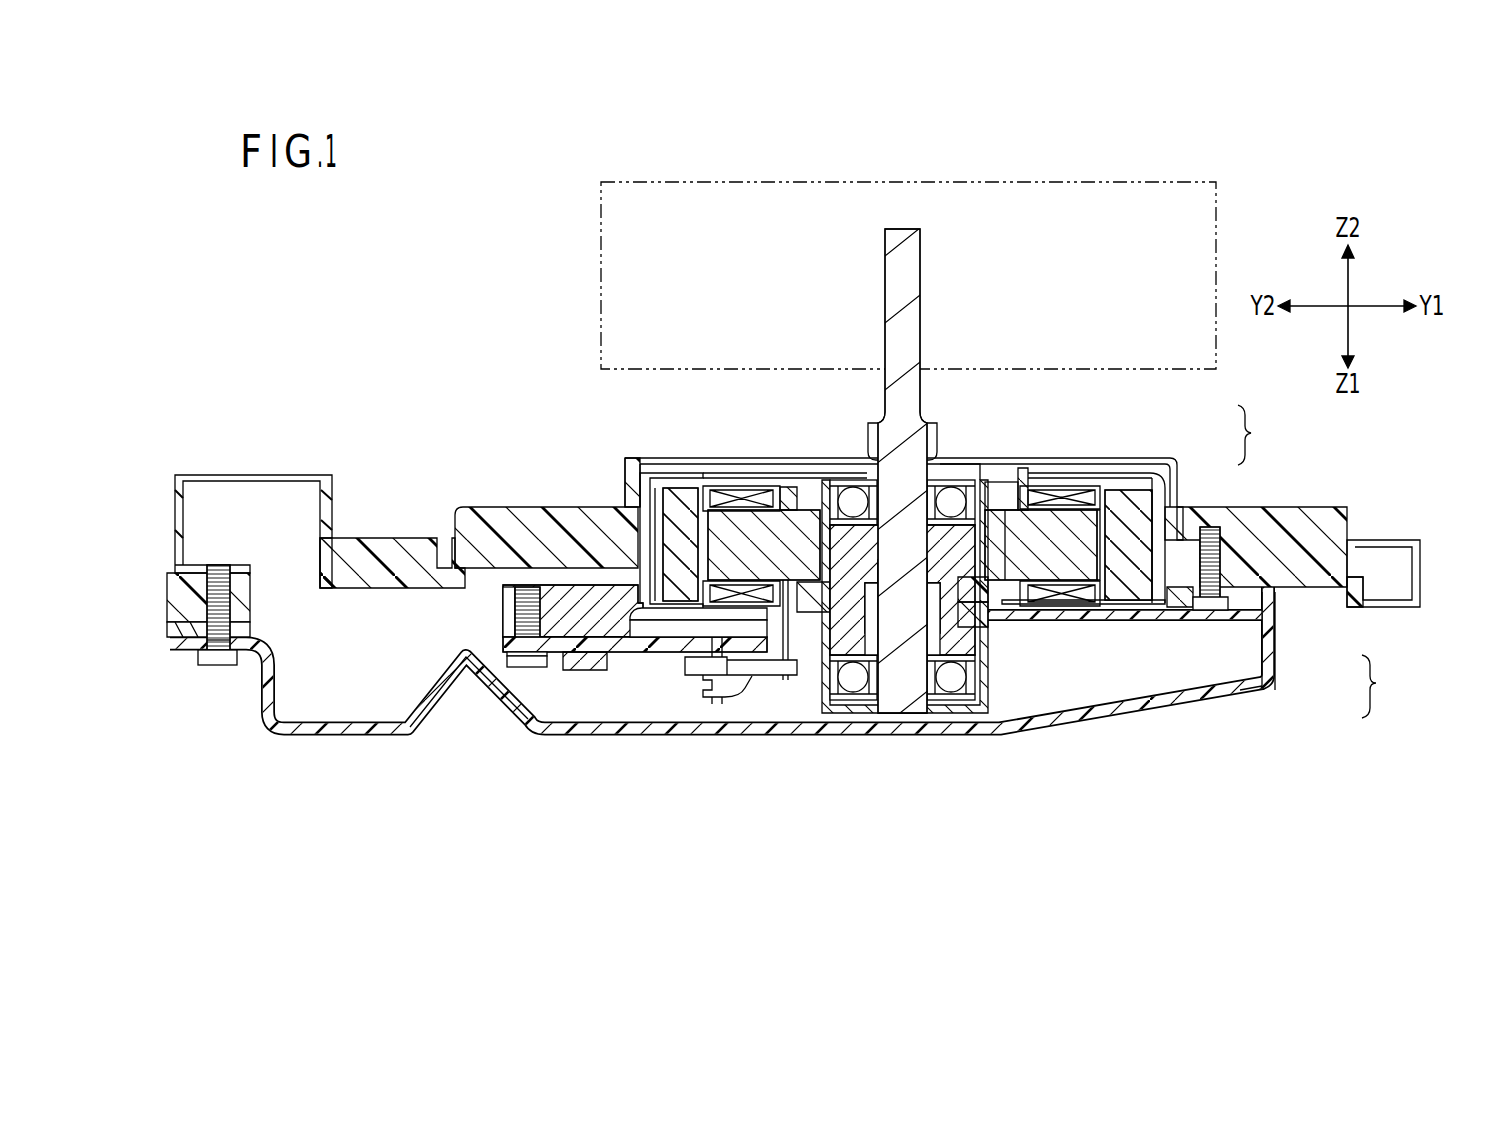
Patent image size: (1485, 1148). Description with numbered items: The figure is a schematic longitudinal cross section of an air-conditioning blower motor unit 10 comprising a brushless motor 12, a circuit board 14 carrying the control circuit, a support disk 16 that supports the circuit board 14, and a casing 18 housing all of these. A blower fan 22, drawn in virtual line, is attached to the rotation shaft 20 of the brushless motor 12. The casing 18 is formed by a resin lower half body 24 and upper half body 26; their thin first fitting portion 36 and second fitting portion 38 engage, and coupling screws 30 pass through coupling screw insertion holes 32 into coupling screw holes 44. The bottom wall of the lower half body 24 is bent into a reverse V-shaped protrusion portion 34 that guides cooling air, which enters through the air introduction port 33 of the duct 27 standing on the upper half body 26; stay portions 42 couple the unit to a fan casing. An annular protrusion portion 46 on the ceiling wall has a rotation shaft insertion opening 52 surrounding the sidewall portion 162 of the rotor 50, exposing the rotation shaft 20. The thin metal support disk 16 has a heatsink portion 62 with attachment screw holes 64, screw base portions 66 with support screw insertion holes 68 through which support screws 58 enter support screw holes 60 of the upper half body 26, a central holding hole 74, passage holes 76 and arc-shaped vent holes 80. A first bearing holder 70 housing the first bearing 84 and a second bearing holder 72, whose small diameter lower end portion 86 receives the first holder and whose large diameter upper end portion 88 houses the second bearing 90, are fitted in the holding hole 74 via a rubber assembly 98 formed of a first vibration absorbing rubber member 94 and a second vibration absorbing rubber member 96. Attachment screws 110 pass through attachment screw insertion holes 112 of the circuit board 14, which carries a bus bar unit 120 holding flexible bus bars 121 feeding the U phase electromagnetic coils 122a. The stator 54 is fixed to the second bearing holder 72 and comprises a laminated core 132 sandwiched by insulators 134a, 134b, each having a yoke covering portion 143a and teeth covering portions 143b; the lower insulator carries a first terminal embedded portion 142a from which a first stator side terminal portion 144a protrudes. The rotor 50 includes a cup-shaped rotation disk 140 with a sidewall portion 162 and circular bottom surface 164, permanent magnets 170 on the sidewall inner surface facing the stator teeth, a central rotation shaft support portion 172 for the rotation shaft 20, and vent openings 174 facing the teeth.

The air-conditioning blower motor unit 10 is at (374, 219).
The brushless motor 12 is at (950, 456).
The circuit board 14 is at (588, 670).
The support disk 16 is at (1142, 624).
The casing 18 is at (1382, 686).
The rotation shaft 20 is at (885, 246).
The blower fan 22 is at (600, 222).
The lower half body 24 is at (1280, 688).
The upper half body 26 is at (1320, 592).
The duct 27 is at (180, 500).
The coupling screws 30 is at (215, 660).
The coupling screw insertion holes 32 is at (222, 655).
The air introduction port 33 is at (318, 575).
The protrusion portion 34 is at (428, 712).
The first fitting portion 36 is at (185, 640).
The second fitting portion 38 is at (175, 628).
The stay portions 42 is at (1415, 597).
The coupling screw holes 44 is at (218, 572).
The annular protrusion portion 46 is at (628, 495).
The rotor 50 is at (1159, 510).
The rotation shaft insertion opening 52 is at (650, 480).
The stator 54 is at (1145, 468).
The support screws 58 is at (1290, 530).
The support screw holes 60 is at (1214, 535).
The heatsink portion 62 is at (608, 625).
The attachment screw holes 64 is at (522, 600).
The screw base portions 66 is at (1183, 606).
The support screw insertion holes 68 is at (1212, 603).
The first bearing holder 70 is at (826, 695).
The second bearing holder 72 is at (902, 677).
The holding hole 74 is at (933, 590).
The passage holes 76 is at (833, 655).
The vent holes 80 is at (660, 638).
The first bearing 84 is at (982, 712).
The small diameter lower end portion 86 is at (862, 520).
The large diameter upper end portion 88 is at (912, 690).
The second bearing 90 is at (949, 472).
The first vibration absorbing rubber member 94 is at (985, 612).
The second vibration absorbing rubber member 96 is at (1000, 615).
The rubber assembly 98 is at (1020, 699).
The attachment screws 110 is at (520, 668).
The attachment screw insertion holes 112 is at (510, 644).
The bus bar unit 120 is at (708, 705).
The bus bars 121 is at (762, 675).
The U phase electromagnetic coils 122a is at (1090, 505).
The laminated core 132 is at (1090, 585).
The insulator 134a is at (1035, 592).
The insulator 134b is at (768, 495).
The rotation disk 140 is at (1128, 488).
The first terminal embedded portion 142a is at (795, 505).
The yoke covering portion 143a is at (1030, 508).
The teeth covering portions 143b is at (705, 572).
The first stator side terminal portion 144a is at (842, 618).
The sidewall portion 162 is at (1178, 522).
The circular bottom surface 164 is at (1024, 490).
The permanent magnets 170 is at (675, 515).
The rotation shaft support portion 172 is at (873, 450).
The vent openings 174 is at (748, 473).